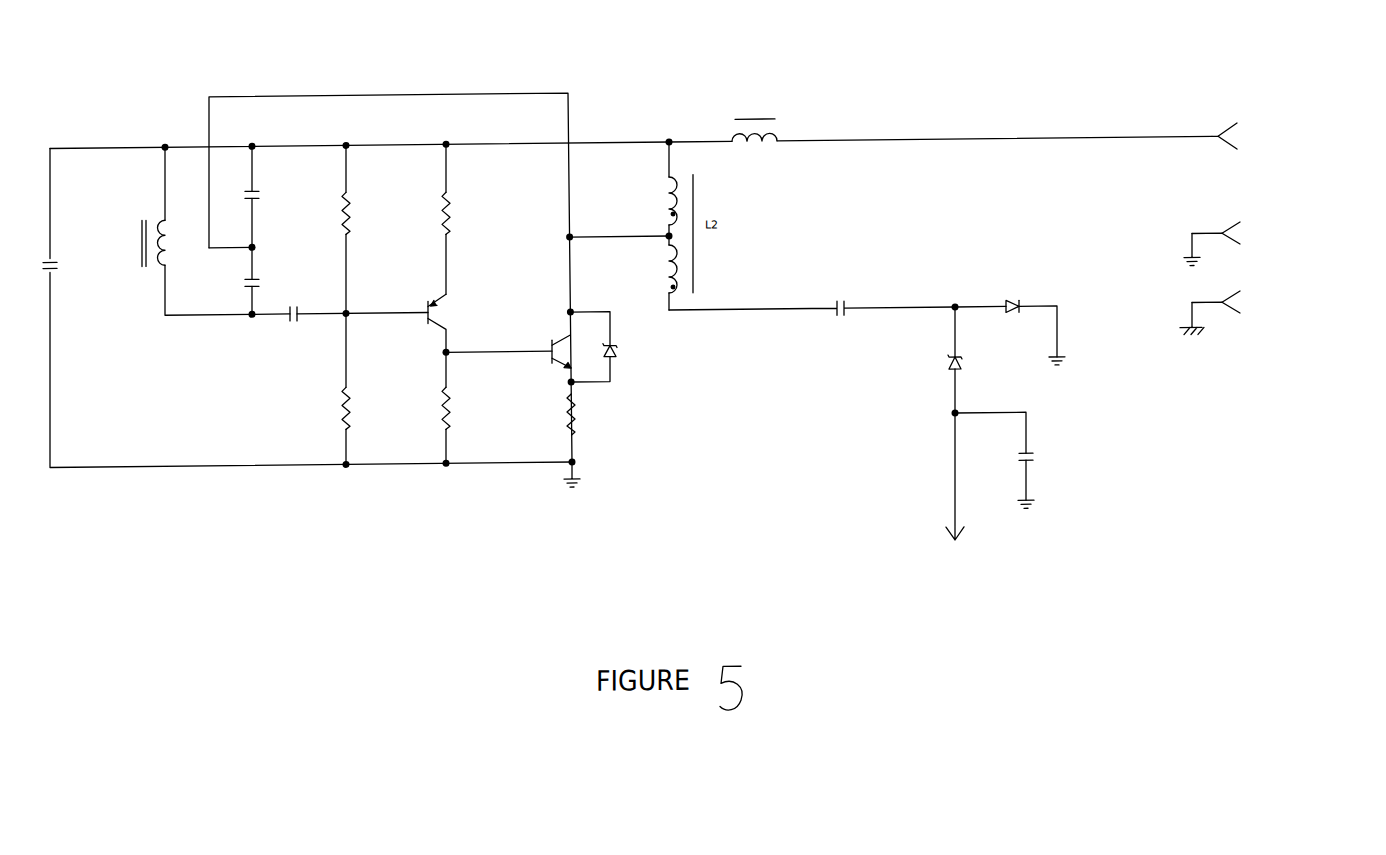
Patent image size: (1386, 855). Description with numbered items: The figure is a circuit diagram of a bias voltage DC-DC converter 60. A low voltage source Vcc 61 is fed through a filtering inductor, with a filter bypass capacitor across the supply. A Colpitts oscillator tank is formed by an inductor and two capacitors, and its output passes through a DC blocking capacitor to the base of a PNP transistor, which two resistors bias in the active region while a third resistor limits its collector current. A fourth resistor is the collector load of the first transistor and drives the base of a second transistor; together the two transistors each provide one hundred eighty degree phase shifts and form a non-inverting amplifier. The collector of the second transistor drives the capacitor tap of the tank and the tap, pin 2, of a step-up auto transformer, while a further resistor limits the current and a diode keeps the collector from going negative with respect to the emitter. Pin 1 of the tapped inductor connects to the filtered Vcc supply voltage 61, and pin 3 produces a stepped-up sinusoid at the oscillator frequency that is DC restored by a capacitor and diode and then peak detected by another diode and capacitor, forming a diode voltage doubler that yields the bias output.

The converter 60 is at (609, 579).
The low voltage source (Vcc) 61 is at (1250, 113).
The pin 1 of tapped inductor L2 1 is at (664, 189).
The tap of L2 2 is at (621, 230).
The pin 3 of tapped inductor L2 3 is at (664, 273).